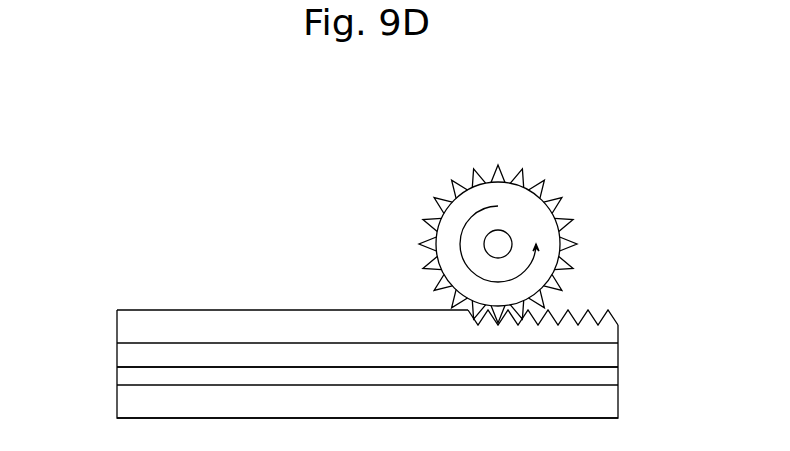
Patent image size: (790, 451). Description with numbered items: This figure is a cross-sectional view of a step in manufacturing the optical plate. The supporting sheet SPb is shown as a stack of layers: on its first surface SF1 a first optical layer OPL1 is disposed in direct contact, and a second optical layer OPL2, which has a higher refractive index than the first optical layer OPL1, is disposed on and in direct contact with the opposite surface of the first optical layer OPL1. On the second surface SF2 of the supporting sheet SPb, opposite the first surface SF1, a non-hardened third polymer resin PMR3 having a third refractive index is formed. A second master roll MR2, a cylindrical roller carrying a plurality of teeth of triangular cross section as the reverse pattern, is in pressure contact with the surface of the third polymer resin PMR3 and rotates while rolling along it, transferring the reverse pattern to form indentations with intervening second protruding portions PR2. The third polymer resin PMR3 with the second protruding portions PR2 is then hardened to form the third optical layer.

The second master roll MR2 is at (552, 228).
The second protruding portions PR2 is at (588, 310).
The second surface SF2 is at (586, 342).
The supporting sheet SPb is at (608, 357).
The first surface SF1 is at (586, 368).
The third polymer resin PMR3 is at (286, 318).
The first optical layer OPL1 is at (127, 377).
The second optical layer OPL2 is at (127, 403).